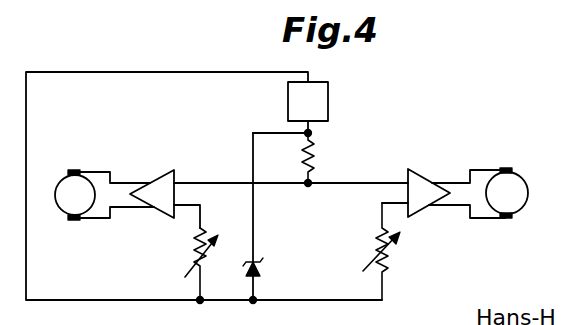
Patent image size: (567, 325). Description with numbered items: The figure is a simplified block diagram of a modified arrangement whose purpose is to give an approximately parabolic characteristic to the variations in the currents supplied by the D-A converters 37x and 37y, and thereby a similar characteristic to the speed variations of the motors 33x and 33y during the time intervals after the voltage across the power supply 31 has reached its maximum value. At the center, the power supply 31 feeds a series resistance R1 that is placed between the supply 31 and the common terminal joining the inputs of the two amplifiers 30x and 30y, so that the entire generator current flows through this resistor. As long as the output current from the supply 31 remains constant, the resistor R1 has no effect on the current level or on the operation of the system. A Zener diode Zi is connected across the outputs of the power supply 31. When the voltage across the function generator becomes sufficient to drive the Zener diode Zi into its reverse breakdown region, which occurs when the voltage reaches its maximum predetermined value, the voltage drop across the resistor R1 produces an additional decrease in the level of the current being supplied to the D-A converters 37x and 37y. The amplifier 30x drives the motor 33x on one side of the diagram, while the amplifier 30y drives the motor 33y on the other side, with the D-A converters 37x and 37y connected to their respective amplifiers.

The power supply 31 is at (328, 95).
The series resistance R1 is at (313, 153).
The Zener diode Zi is at (257, 216).
The amplifier 30x is at (160, 180).
The motor 33x is at (78, 182).
The D-A converter 37x is at (193, 251).
The amplifier 30y is at (418, 180).
The motor 33y is at (513, 185).
The D-A converter 37y is at (387, 259).